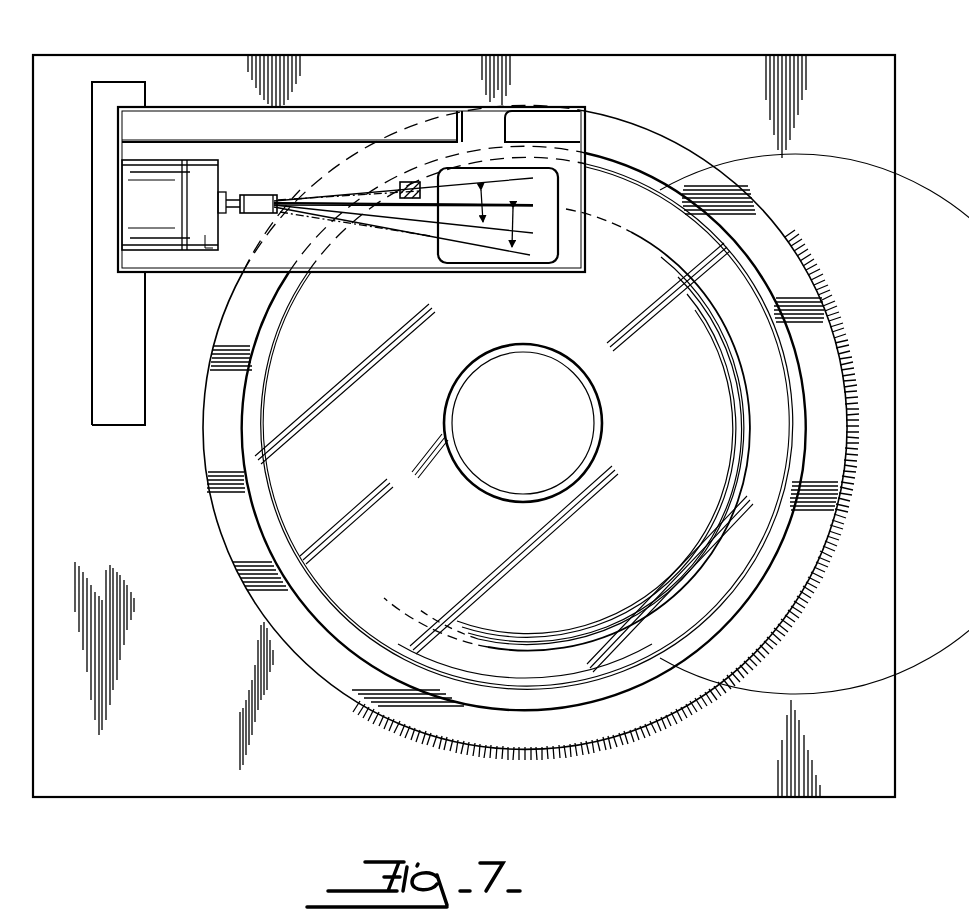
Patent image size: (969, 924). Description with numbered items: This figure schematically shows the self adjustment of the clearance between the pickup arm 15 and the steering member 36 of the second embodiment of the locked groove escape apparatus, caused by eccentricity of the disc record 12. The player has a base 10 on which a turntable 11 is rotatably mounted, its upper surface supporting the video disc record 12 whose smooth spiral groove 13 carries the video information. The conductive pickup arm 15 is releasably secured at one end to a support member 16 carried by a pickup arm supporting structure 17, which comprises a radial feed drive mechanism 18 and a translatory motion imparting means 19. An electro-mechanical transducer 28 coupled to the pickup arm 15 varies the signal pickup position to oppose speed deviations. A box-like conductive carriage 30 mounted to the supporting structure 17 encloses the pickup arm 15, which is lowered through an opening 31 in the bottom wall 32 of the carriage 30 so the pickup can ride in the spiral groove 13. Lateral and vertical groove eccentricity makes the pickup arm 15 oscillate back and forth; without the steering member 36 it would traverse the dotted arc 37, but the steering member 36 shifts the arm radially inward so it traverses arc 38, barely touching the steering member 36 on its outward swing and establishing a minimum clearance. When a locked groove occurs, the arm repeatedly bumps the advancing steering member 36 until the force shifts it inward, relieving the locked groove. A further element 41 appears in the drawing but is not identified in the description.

The base 10 is at (37, 532).
The turntable 11 is at (238, 556).
The video disc record 12 is at (318, 603).
The spiral groove 13 is at (667, 573).
The pickup arm 15 is at (531, 255).
The support member 16 is at (267, 196).
The pickup arm supporting structure 17 is at (56, 118).
The radial feed drive mechanism 18 is at (122, 200).
The translatory motion imparting means 19 is at (157, 213).
The electro-mechanical transducer 28 is at (208, 247).
The carriage 30 is at (356, 272).
The opening 31 is at (438, 250).
The bottom wall 32 is at (259, 270).
The steering member 36 is at (407, 182).
The arc 37 is at (483, 198).
The arc 38 is at (541, 247).
The light beam 41 is at (535, 204).